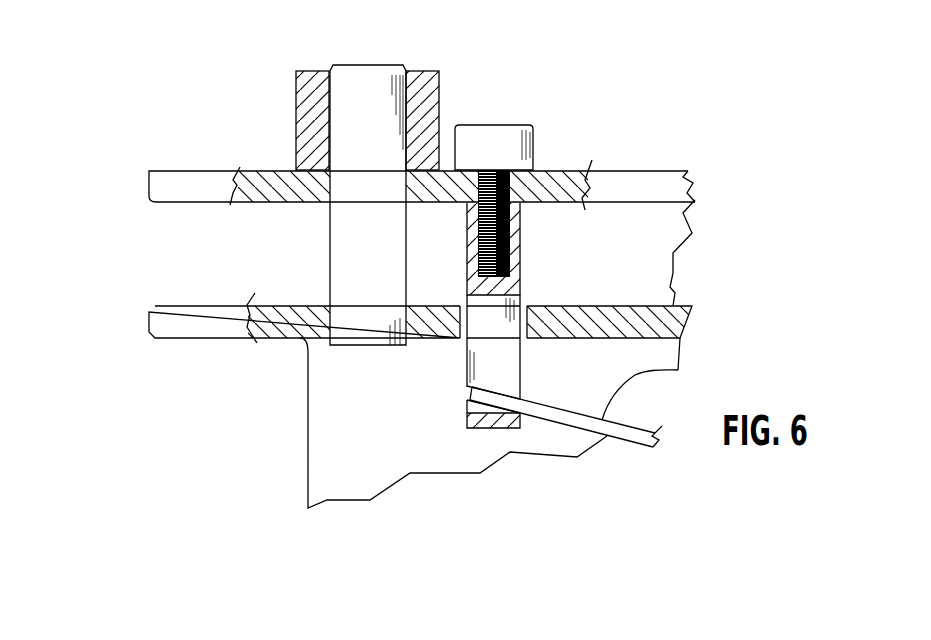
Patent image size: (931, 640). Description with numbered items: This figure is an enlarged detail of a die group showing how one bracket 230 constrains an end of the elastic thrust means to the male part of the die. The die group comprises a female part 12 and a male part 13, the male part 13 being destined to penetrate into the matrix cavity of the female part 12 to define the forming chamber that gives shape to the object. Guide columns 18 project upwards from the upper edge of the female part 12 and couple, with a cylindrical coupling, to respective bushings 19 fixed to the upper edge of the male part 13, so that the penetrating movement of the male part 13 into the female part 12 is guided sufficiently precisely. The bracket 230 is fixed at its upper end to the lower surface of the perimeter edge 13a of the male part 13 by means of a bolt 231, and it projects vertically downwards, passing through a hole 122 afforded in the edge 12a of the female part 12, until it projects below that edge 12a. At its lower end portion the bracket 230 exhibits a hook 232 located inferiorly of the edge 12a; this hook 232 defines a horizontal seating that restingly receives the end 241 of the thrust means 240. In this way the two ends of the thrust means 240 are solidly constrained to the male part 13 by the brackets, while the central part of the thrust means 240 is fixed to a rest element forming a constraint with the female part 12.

The female part 12 is at (307, 465).
The edge of the female part 12a is at (189, 340).
The male part 13 is at (642, 258).
The perimeter edge of the male part 13a is at (163, 170).
The guide column 18 is at (330, 240).
The bushing 19 is at (297, 107).
The hole 122 is at (472, 337).
The bracket 230 is at (522, 232).
The bolt 231 is at (493, 125).
The hook 232 is at (467, 425).
The thrust means 240 is at (678, 370).
The end of the thrust means 241 is at (497, 391).